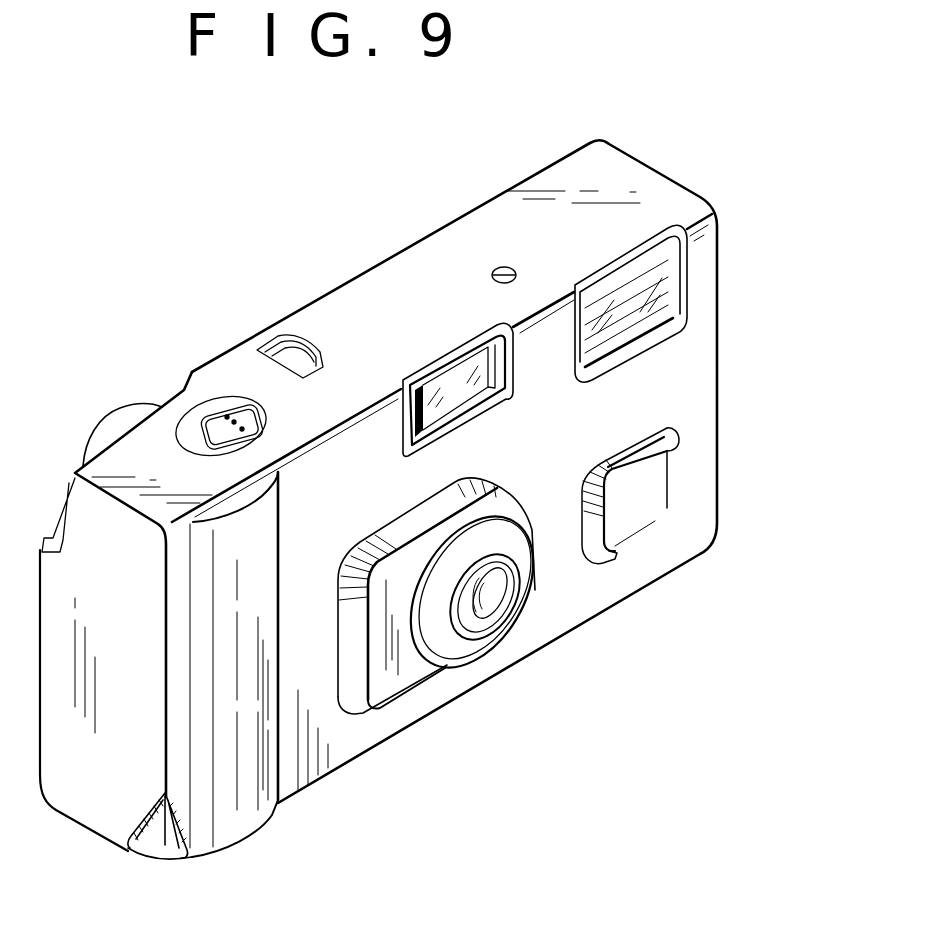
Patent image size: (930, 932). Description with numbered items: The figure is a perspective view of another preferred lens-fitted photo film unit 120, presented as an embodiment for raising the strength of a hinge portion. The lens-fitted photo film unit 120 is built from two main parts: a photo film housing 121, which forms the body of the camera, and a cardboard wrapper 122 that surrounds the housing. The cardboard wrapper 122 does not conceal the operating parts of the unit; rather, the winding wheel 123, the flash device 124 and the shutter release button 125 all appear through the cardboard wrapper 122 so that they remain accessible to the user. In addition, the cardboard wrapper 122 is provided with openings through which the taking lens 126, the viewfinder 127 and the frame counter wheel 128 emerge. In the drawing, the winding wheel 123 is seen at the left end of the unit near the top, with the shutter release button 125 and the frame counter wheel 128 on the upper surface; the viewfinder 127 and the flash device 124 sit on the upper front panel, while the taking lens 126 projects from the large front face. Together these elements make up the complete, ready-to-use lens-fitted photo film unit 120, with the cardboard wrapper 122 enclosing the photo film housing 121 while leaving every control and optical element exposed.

The lens-fitted photo film unit 120 is at (367, 252).
The photo film housing 121 is at (170, 849).
The cardboard wrapper 122 is at (96, 832).
The winding wheel 123 is at (120, 423).
The flash device 124 is at (670, 270).
The shutter release button 125 is at (227, 407).
The taking lens 126 is at (490, 591).
The viewfinder 127 is at (450, 395).
The frame counter wheel 128 is at (287, 337).